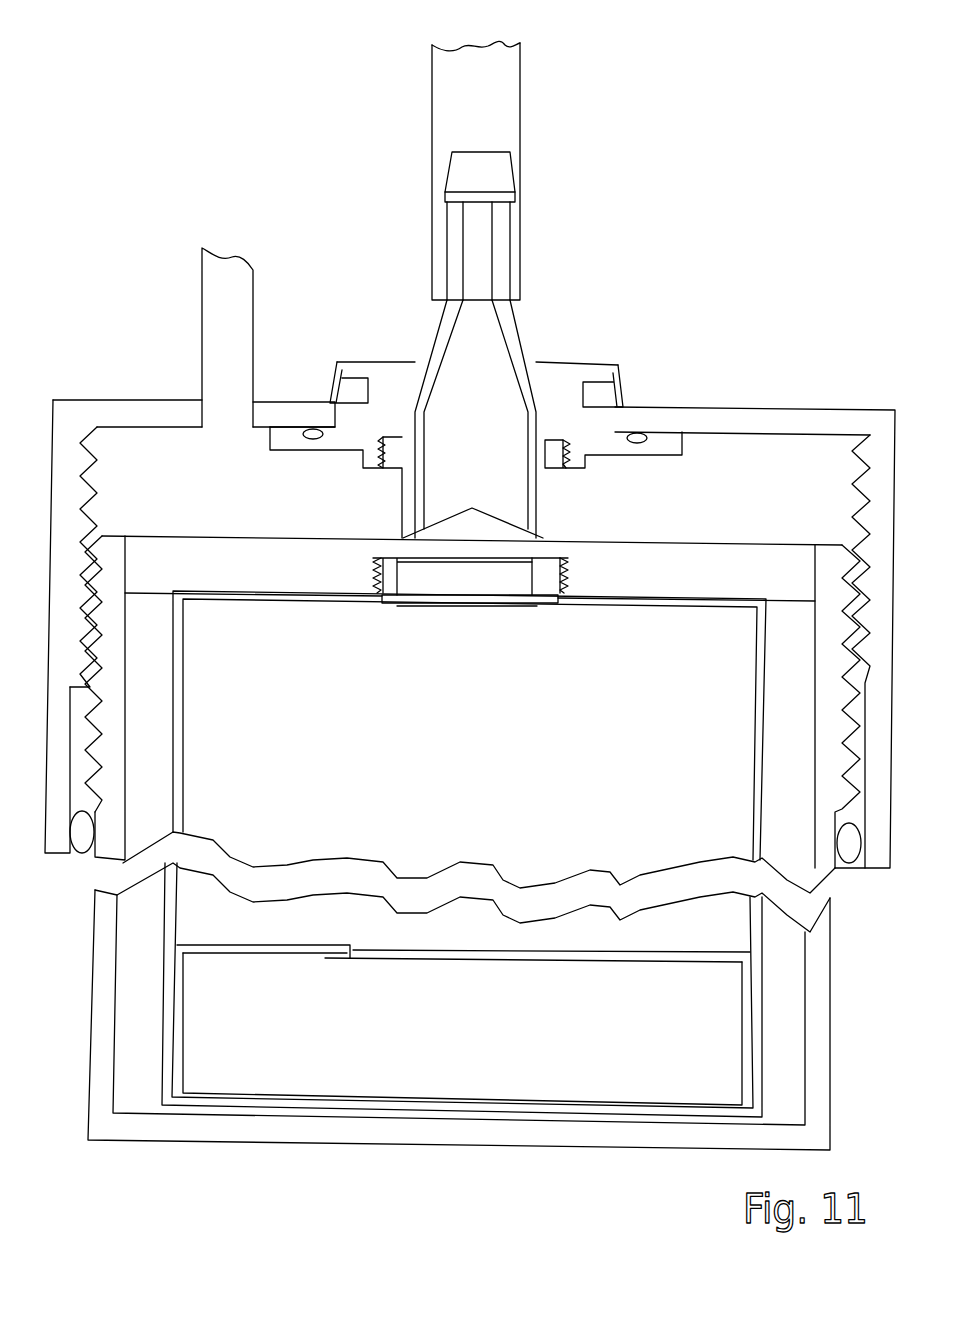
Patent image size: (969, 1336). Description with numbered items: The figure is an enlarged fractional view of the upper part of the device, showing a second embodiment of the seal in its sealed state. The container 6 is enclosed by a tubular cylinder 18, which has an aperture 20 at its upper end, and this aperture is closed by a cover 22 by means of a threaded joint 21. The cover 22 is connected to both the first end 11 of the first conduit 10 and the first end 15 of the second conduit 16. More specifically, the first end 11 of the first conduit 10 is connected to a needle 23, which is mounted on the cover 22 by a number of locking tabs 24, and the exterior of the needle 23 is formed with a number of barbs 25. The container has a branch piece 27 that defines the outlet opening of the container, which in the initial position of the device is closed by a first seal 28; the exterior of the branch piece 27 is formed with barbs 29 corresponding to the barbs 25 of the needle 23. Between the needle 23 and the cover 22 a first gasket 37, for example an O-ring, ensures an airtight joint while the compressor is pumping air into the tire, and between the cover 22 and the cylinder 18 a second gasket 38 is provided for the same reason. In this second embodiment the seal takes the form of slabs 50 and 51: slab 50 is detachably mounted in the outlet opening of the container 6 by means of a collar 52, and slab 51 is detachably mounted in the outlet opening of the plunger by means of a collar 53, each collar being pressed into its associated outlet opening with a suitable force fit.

The first conduit 10 is at (493, 77).
The first end of the first conduit 11 is at (513, 235).
The second conduit 16 is at (222, 272).
The first end of the second conduit 15 is at (232, 415).
The cover 22 is at (112, 415).
The locking tabs 24 is at (620, 400).
The barbs 25 is at (378, 450).
The branch piece 27 is at (560, 455).
The first gasket 37 is at (640, 440).
The needle 23 is at (500, 378).
The aperture 20 is at (790, 563).
The second gasket 38 is at (848, 850).
The barbs 29 is at (373, 575).
The collar 52 is at (537, 585).
The slab 50 is at (525, 605).
The first seal 28 is at (447, 608).
The threaded joint 21 is at (90, 612).
The container 6 is at (757, 735).
The tubular cylinder 18 is at (823, 873).
The collar 53 is at (352, 948).
The slab 51 is at (416, 965).